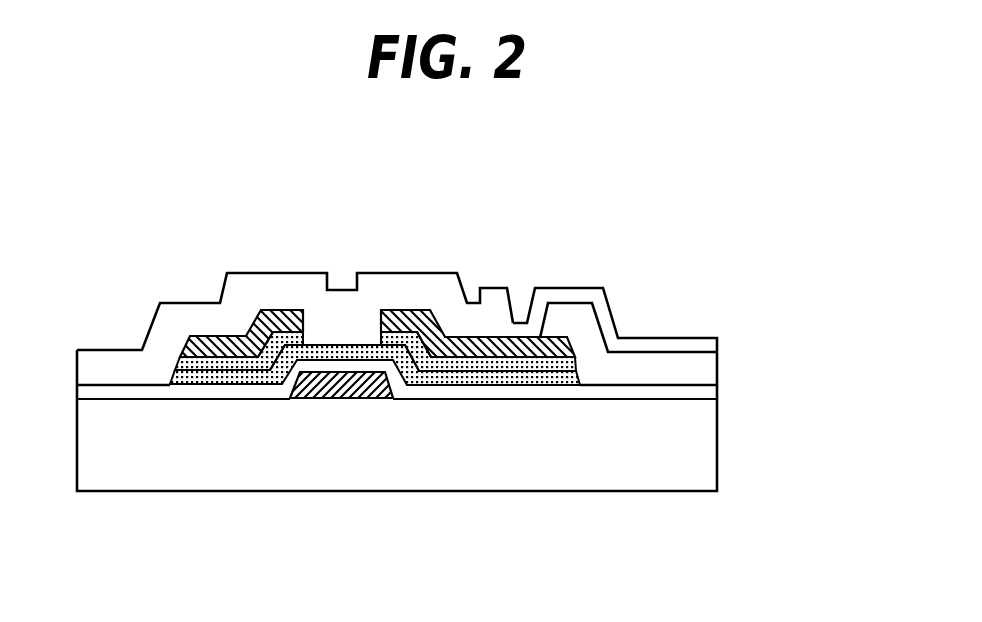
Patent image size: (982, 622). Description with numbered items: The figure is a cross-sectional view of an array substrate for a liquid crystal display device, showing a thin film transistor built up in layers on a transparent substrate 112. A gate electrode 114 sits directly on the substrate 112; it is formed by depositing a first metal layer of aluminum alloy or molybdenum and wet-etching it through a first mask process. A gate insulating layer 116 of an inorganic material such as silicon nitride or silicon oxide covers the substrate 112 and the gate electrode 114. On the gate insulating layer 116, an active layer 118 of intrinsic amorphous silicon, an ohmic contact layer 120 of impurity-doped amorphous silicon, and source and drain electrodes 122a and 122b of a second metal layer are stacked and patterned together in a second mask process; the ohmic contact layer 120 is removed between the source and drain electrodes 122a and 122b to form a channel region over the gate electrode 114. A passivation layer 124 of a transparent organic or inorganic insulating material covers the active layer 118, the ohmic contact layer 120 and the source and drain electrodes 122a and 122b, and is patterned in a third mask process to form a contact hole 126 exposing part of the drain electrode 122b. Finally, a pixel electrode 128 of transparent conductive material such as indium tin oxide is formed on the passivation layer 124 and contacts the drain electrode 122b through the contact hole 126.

The transparent substrate 112 is at (698, 458).
The gate electrode 114 is at (338, 392).
The gate insulating layer 116 is at (713, 392).
The active layer 118 is at (190, 345).
The ohmic contact layer 120 is at (228, 350).
The source electrode 122a is at (278, 310).
The drain electrode 122b is at (397, 310).
The passivation layer 124 is at (710, 363).
The contact hole 126 is at (521, 290).
The pixel electrode 128 is at (653, 338).